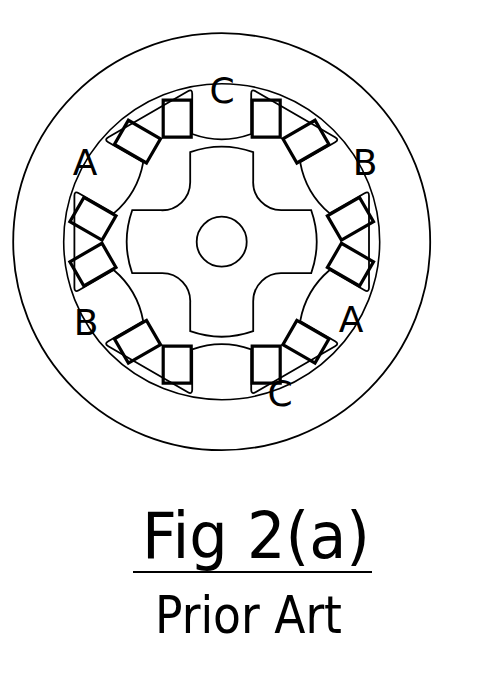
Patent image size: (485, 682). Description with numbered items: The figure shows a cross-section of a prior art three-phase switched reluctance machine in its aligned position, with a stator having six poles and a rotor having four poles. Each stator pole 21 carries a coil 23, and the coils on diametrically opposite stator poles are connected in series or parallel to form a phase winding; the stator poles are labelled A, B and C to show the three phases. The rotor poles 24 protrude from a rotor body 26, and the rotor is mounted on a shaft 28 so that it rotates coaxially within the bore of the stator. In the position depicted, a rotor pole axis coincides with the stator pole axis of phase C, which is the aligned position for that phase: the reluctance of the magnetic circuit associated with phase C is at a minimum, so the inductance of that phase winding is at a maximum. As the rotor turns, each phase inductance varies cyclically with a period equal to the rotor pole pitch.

The stator pole 21 is at (241, 118).
The coil 23 is at (312, 143).
The rotor pole 24 is at (200, 327).
The rotor body 26 is at (193, 256).
The shaft 28 is at (228, 244).